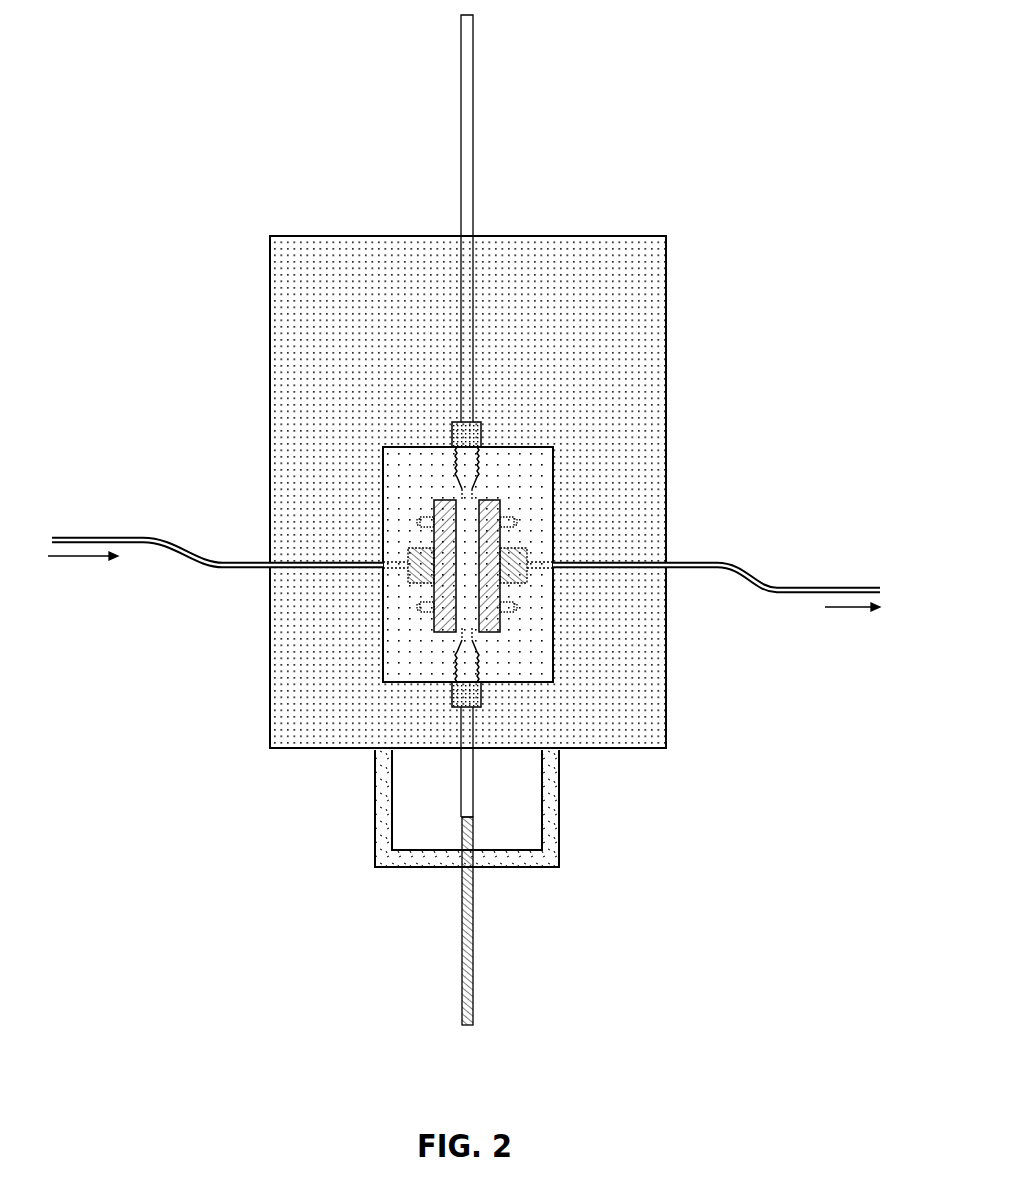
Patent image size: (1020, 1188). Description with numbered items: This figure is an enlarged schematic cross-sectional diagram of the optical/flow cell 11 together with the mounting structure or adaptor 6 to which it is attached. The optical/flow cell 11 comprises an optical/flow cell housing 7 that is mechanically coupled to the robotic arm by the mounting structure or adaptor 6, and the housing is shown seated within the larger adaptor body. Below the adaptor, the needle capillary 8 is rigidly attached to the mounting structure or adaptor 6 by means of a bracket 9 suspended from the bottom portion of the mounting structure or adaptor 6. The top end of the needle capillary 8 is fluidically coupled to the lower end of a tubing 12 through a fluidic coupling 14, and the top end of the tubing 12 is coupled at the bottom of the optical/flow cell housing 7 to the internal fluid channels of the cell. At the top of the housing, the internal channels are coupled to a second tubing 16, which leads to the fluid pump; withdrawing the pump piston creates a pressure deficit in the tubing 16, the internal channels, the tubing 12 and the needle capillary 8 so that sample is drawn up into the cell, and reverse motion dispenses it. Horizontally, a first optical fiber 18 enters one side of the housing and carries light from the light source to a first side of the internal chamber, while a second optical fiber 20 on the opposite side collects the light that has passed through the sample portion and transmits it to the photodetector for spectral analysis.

The mounting structure or adaptor 6 is at (270, 276).
The optical/flow cell housing 7 is at (468, 564).
The needle capillary 8 is at (473, 965).
The bracket 9 is at (559, 775).
The optical/flow cell 11 is at (366, 421).
The tubing 12 is at (473, 772).
The fluidic coupling 14 is at (460, 831).
The second tubing 16 is at (461, 98).
The first optical fiber 18 is at (143, 540).
The second optical fiber 20 is at (803, 585).